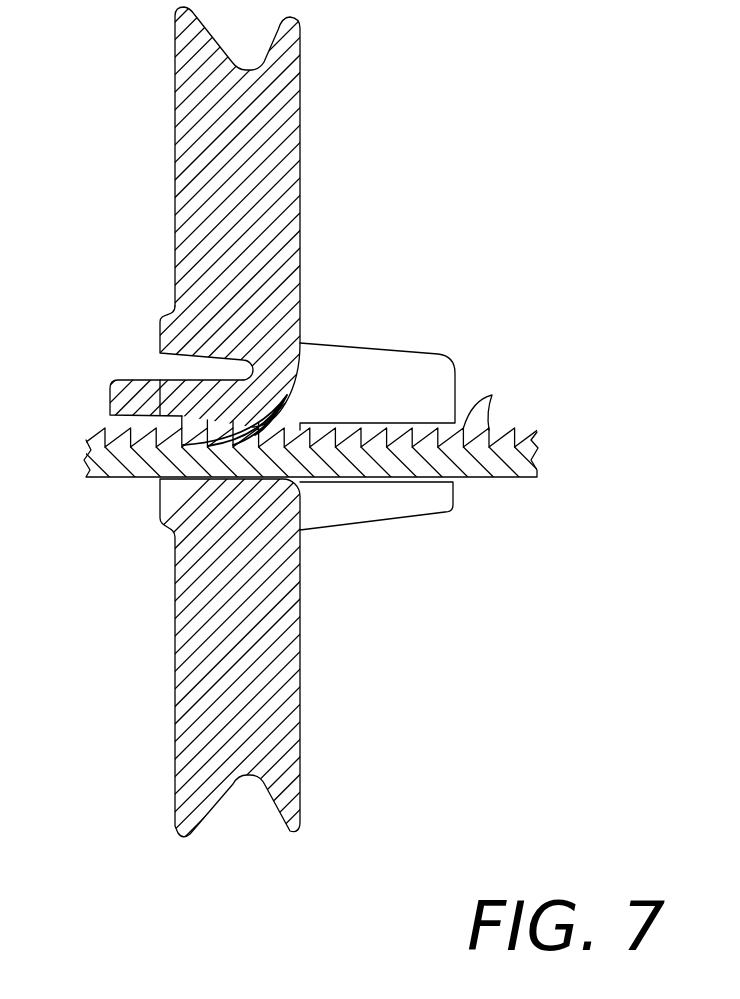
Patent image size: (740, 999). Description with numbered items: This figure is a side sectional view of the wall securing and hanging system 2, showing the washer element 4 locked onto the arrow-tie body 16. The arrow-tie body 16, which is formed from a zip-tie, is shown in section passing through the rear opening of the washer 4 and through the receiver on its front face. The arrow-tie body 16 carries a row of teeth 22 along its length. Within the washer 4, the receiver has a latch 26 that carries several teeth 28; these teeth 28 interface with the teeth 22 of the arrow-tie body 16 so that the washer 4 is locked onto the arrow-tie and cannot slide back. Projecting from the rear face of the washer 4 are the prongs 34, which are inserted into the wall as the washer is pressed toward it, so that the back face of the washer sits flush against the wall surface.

The wall securing and hanging system 2 is at (540, 112).
The washer element 4 is at (160, 125).
The arrow-tie body 16 is at (283, 418).
The teeth 22 is at (492, 397).
The latch 26 is at (128, 385).
The teeth 28 is at (282, 397).
The prongs 34 is at (412, 367).